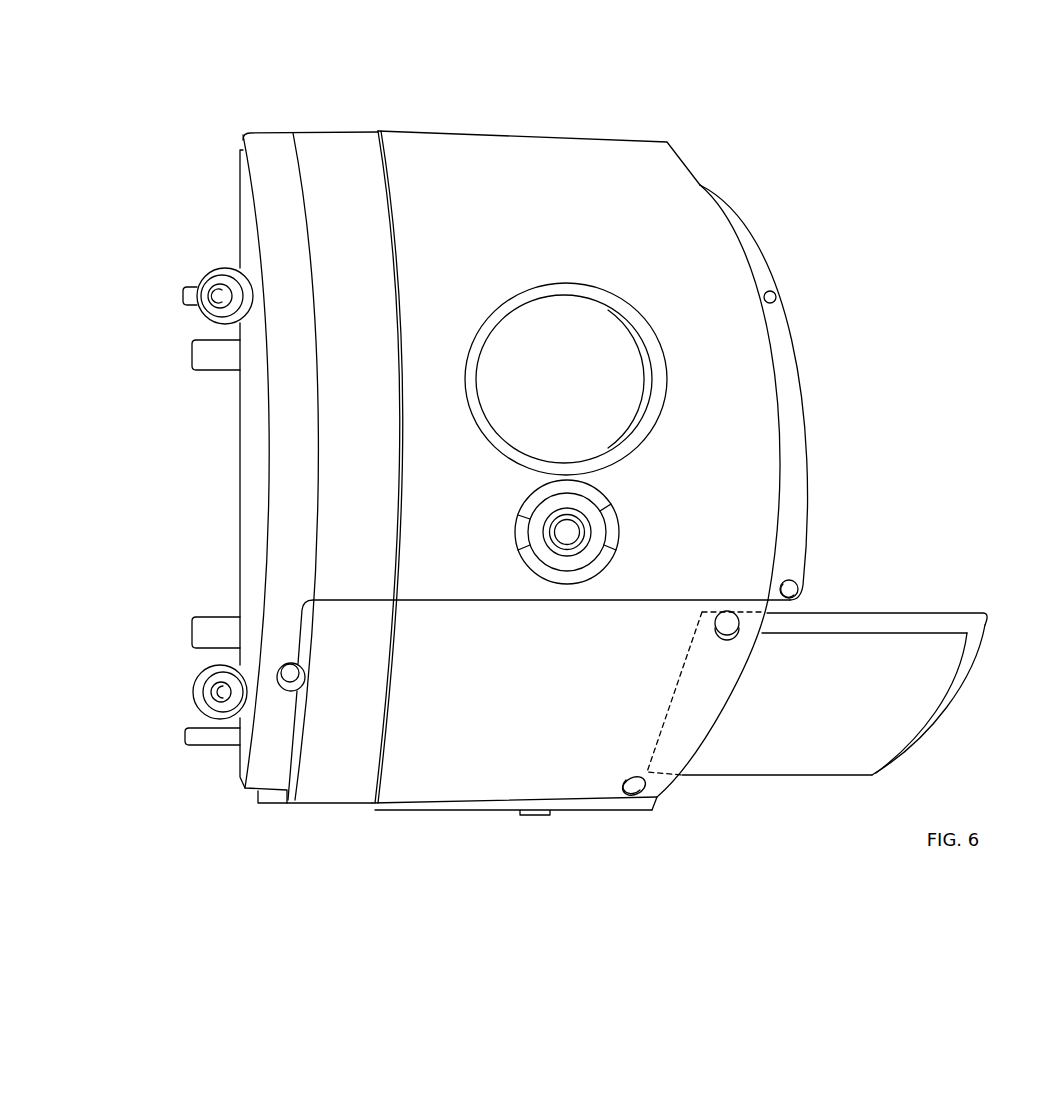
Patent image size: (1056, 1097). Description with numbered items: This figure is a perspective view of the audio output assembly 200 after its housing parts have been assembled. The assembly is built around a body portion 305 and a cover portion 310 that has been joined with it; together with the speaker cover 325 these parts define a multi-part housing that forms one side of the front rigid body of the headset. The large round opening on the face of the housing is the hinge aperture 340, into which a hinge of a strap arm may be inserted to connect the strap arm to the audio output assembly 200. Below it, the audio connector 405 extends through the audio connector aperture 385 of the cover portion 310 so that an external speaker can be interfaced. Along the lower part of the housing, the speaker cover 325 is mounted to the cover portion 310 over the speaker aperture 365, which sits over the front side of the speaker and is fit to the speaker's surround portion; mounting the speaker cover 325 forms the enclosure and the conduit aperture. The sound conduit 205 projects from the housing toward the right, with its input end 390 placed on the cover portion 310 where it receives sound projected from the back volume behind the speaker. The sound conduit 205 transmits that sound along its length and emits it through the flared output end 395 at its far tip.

The audio output assembly 200 is at (562, 107).
The cover portion 310 is at (335, 160).
The body portion 305 is at (716, 205).
The hinge aperture 340 is at (662, 377).
The audio connector 405 is at (547, 528).
The audio connector aperture 385 is at (517, 537).
The speaker cover 325 is at (638, 618).
The speaker aperture 365 is at (291, 768).
The input end 390 is at (670, 698).
The sound conduit 205 is at (800, 755).
The output end 395 is at (940, 713).